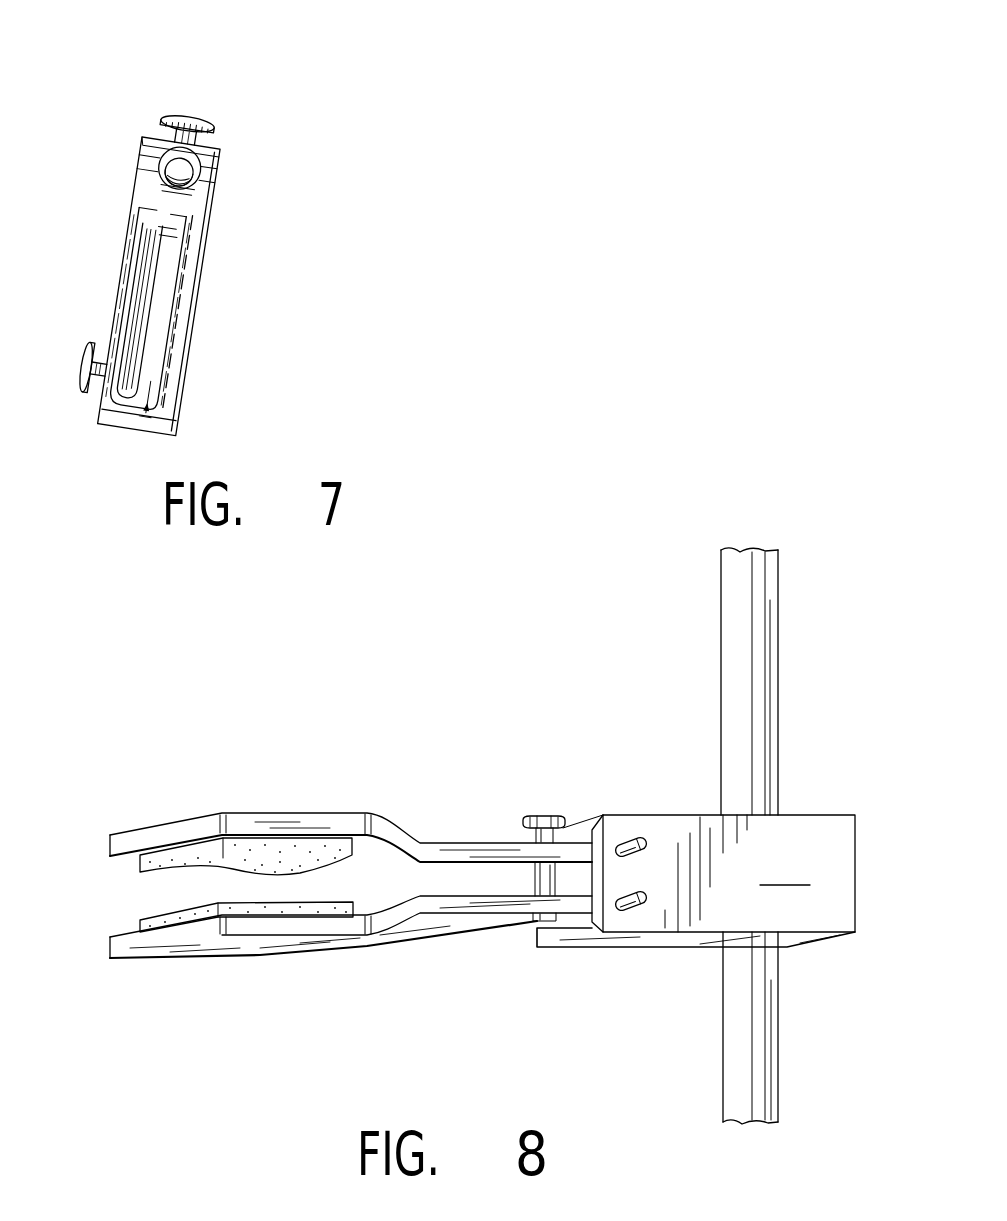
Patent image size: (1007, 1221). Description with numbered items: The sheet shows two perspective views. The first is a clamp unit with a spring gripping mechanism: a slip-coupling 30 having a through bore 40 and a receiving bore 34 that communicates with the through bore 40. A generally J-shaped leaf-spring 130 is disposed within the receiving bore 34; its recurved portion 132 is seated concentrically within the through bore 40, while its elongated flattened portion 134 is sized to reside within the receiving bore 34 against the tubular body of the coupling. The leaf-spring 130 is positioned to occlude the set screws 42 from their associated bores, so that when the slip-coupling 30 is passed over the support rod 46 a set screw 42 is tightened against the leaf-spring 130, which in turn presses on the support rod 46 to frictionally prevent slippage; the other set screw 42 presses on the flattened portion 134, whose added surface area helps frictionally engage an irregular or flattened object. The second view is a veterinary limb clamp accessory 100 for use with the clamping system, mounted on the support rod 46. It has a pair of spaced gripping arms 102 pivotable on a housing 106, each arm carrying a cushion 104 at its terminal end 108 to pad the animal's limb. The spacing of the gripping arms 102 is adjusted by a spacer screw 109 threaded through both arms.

In FIG. 7, the slip-coupling 30 is at (212, 276).
In FIG. 7, the receiving bore 34 is at (141, 410).
In FIG. 7, the through bore 40 is at (166, 153).
In FIG. 7, the set screw 42 is at (203, 140).
In FIG. 7, the leaf-spring 130 is at (142, 272).
In FIG. 7, the recurved portion 132 is at (196, 168).
In FIG. 7, the flattened portion 134 is at (136, 362).
In FIG. 8, the limb clamp accessory 100 is at (397, 773).
In FIG. 8, the gripping arms 102 is at (440, 838).
In FIG. 8, the cushion 104 is at (142, 868).
In FIG. 8, the housing 106 is at (696, 881).
In FIG. 8, the terminal end 108 is at (102, 958).
In FIG. 8, the spacer screw 109 is at (541, 815).
In FIG. 8, the support rod 46 is at (763, 731).